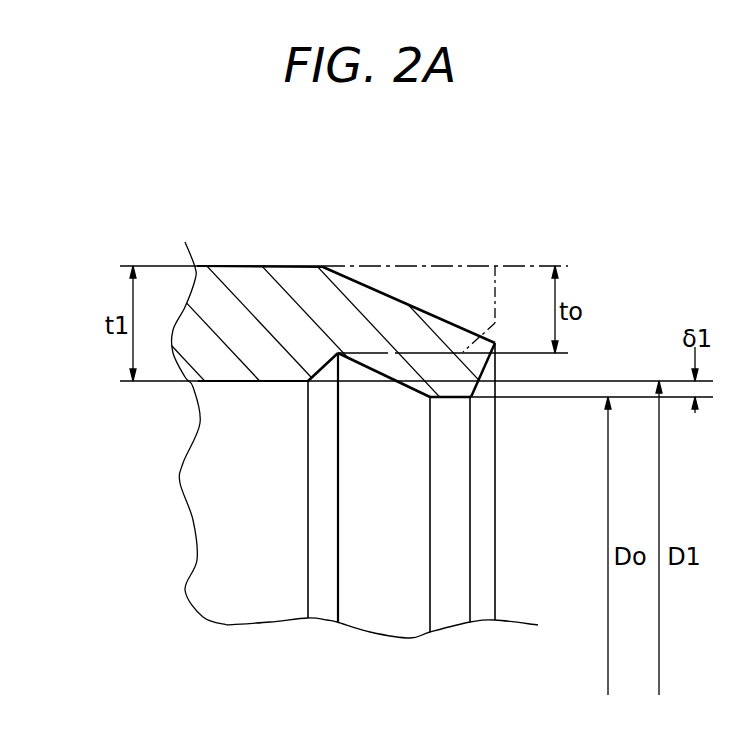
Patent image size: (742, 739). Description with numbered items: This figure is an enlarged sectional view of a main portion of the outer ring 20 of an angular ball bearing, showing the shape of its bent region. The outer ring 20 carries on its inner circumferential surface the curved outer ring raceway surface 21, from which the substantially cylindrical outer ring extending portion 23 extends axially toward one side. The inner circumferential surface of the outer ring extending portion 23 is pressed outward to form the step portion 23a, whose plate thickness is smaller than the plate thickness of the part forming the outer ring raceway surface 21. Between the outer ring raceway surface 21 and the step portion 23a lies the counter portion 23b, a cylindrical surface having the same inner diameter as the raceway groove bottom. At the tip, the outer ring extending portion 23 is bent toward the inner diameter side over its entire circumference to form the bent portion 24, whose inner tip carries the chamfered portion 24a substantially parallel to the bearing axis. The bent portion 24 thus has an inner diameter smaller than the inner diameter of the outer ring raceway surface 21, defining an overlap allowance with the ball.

The outer ring 20 is at (262, 266).
The outer ring raceway surface 21 is at (200, 383).
The outer ring extending portion 23 is at (352, 310).
The step portion 23a is at (323, 367).
The counter portion 23b is at (262, 383).
The bent portion 24 is at (462, 373).
The chamfered portion 24a is at (450, 397).